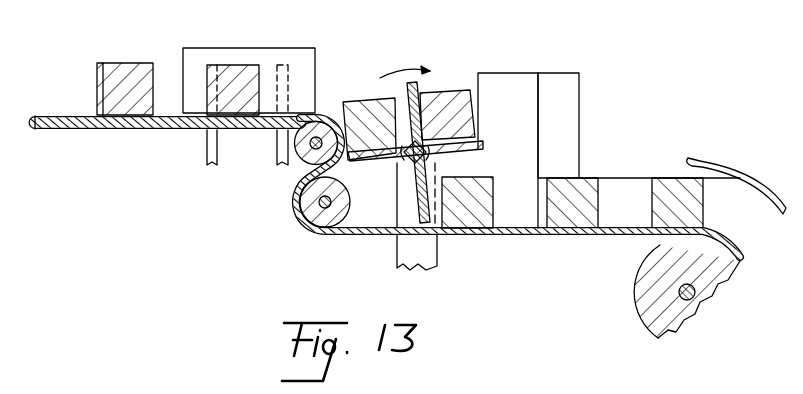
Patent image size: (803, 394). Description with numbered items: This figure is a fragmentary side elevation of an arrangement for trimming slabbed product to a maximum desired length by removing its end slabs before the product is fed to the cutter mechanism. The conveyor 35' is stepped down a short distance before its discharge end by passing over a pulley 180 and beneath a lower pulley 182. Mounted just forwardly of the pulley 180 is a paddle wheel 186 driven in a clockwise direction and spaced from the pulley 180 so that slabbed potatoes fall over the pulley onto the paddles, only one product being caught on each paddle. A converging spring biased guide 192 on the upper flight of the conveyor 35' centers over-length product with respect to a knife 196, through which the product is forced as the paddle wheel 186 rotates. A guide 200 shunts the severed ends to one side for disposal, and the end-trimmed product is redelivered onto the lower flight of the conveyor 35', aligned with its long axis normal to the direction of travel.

The conveyor 35' is at (410, 168).
The pulley 180 is at (302, 162).
The lower pulley 182 is at (318, 233).
The paddle wheel 186 is at (417, 83).
The converging spring biased guide 192 is at (297, 48).
The knife 196 is at (480, 92).
The guide 200 is at (617, 35).